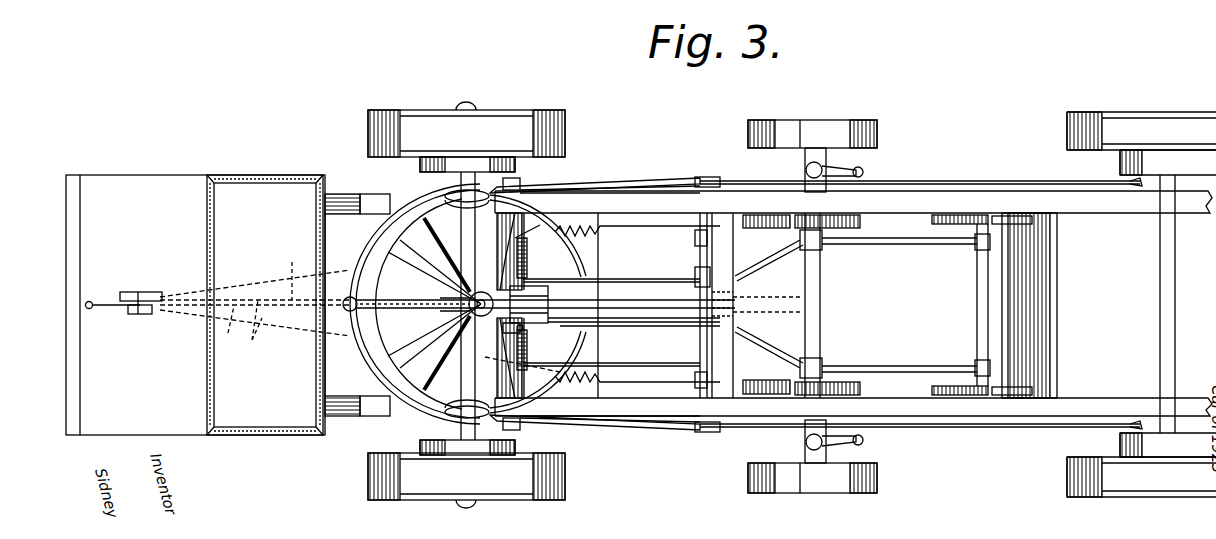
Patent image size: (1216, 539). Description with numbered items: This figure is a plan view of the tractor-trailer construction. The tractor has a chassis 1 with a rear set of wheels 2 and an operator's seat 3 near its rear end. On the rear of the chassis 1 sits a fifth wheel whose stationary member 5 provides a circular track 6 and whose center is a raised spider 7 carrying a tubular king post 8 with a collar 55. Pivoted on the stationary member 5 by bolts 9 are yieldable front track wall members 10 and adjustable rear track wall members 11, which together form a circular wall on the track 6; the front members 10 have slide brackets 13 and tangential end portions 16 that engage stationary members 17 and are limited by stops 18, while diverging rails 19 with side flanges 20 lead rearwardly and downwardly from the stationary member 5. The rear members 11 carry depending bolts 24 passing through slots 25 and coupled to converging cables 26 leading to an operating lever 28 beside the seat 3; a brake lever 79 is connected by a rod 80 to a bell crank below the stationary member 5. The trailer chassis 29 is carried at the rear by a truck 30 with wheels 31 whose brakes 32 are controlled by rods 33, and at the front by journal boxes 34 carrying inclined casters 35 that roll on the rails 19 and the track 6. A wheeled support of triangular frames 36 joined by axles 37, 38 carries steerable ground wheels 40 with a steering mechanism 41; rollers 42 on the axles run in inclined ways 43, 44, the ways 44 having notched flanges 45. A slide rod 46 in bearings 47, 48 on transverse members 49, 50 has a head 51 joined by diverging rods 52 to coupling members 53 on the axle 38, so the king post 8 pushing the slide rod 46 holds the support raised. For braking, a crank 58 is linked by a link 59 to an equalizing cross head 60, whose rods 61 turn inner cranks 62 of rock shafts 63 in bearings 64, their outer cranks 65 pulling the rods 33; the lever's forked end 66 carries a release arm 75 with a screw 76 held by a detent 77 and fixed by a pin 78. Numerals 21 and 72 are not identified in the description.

The chassis 1 is at (341, 205).
The rear set of wheels 2 is at (560, 134).
The driver or operator's seat 3 is at (265, 305).
The stationary member 5 is at (368, 378).
The circular track or slide-way 6 is at (405, 318).
The raised or convex spider 7 is at (420, 240).
The central tubular king post 8 is at (430, 270).
The bolts 9 is at (346, 300).
The yieldable front track wall members 10 is at (378, 226).
The adjustable and yieldable rear track wall members 11 is at (590, 330).
The slide brackets 13 is at (455, 160).
The end portions 16 is at (522, 190).
The stationary members 17 is at (585, 188).
The stops 18 is at (520, 178).
The stationary diverging rails 19 is at (680, 180).
The side flanges 20 is at (655, 180).
The spring rod 21 is at (600, 228).
The depending bolts 24 is at (552, 235).
The slots 25 is at (510, 262).
The converging cables or rods 26 is at (338, 259).
The operating lever 28 is at (116, 308).
The trailer chassis or body 29 is at (1005, 195).
The rear axle construction or truck 30 is at (1160, 306).
The ground engaging wheels 31 is at (1070, 130).
The brakes 32 is at (1122, 162).
The rods 33 is at (948, 184).
The side journal boxes or bearings 34 is at (480, 190).
The inwardly inclined wheels or casters 35 is at (445, 196).
The triangular frames 36 is at (905, 246).
The transverse axle 37 is at (978, 306).
The transverse axle 38 is at (820, 296).
The ground engaging wheels 40 is at (858, 122).
The steering mechanism 41 is at (860, 168).
The rollers 42 is at (910, 222).
The inclined ways 43 is at (975, 240).
The inclined ways 44 is at (850, 222).
The scalloped or notched flanges 45 is at (765, 230).
The slide rod 46 is at (598, 322).
The bearing 47 is at (745, 312).
The bearing 48 is at (530, 304).
The transverse member 49 is at (722, 305).
The transverse member 50 is at (548, 370).
The head 51 is at (455, 296).
The diverging rods 52 is at (760, 260).
The coupling members 53 is at (815, 246).
The collar 55 is at (440, 320).
The crank 58 is at (445, 345).
The link 59 is at (516, 340).
The equalizing cross head 60 is at (527, 340).
The rods 61 is at (648, 278).
The inner cranks 62 is at (695, 284).
The rock shafts 63 is at (700, 246).
The bearings 64 is at (696, 270).
The cranks 65 is at (703, 178).
The bifurcated or forked end 66 is at (462, 240).
The dashed line 72 is at (255, 326).
The release arm 75 is at (580, 285).
The screw 76 is at (512, 240).
The resilient detent or locking device 77 is at (450, 325).
The set screw or transverse pin 78 is at (540, 215).
The brake lever 79 is at (143, 296).
The rod 80 is at (255, 271).